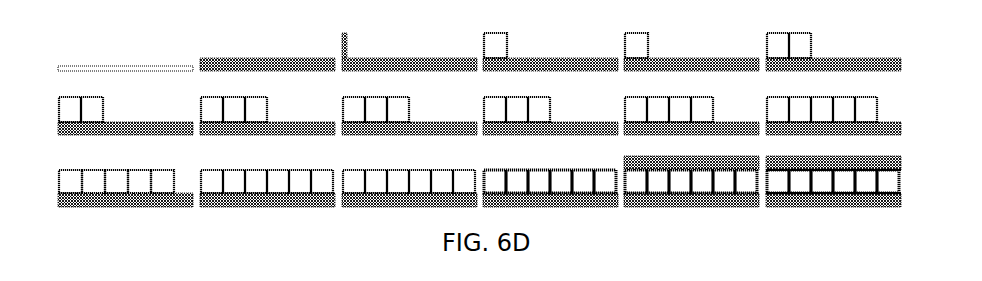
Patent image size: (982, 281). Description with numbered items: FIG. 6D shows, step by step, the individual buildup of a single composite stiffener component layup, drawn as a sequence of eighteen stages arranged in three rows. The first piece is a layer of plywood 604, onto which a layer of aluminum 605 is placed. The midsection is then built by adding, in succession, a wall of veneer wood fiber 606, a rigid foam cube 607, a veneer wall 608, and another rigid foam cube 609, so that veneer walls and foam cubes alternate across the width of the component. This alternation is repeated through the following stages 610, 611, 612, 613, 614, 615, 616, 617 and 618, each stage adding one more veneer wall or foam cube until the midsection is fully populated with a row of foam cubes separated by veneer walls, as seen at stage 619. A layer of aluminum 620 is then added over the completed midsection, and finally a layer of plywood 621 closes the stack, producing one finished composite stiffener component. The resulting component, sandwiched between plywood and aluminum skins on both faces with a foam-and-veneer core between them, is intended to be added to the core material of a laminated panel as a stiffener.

The layer of plywood 604 is at (125, 78).
The layer of aluminum 605 is at (267, 74).
The wall of veneer wood fiber 606 is at (409, 61).
The rigid foam cube 607 is at (550, 61).
The veneer wall 608 is at (691, 61).
The rigid foam cube 609 is at (833, 61).
The midsection buildup stage 610 is at (125, 125).
The midsection buildup stage 611 is at (267, 125).
The midsection buildup stage 612 is at (409, 125).
The midsection buildup stage 613 is at (550, 125).
The midsection buildup stage 614 is at (691, 125).
The midsection buildup stage 615 is at (833, 125).
The midsection buildup stage 616 is at (125, 197).
The midsection buildup stage 617 is at (267, 197).
The midsection buildup stage 618 is at (409, 197).
The completed midsection 619 is at (550, 197).
The layer of aluminum 620 is at (691, 190).
The layer of plywood 621 is at (833, 190).